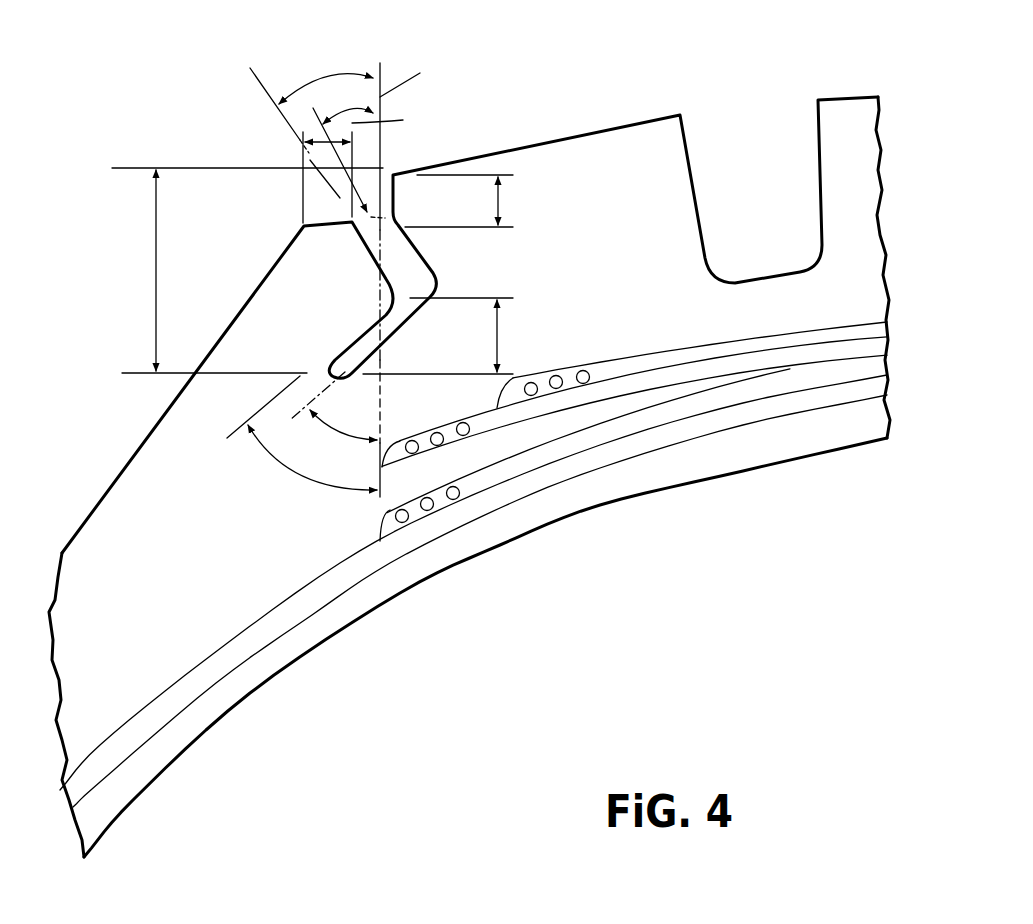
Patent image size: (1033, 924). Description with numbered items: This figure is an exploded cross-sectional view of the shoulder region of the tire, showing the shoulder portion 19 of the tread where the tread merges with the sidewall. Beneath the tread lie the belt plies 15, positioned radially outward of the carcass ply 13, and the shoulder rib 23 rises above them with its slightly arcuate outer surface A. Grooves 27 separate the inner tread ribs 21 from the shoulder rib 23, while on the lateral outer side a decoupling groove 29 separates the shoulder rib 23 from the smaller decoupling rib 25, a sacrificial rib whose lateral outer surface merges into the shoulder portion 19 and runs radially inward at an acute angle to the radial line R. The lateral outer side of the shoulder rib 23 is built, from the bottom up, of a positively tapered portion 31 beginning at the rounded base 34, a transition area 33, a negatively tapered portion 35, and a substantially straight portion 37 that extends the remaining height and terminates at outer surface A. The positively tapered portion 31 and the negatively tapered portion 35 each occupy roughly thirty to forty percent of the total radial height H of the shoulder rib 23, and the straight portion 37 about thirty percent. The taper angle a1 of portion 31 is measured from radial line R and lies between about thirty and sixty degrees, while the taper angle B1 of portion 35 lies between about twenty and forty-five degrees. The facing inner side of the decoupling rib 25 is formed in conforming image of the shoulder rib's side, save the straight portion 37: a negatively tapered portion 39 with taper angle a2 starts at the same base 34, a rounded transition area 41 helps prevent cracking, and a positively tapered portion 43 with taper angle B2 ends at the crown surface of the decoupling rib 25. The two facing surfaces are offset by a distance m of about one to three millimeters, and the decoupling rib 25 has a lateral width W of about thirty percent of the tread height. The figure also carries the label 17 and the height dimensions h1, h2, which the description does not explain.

The carcass ply 13 is at (301, 598).
The belt plies 15 is at (693, 357).
The reinforcement cords / tubes 17 is at (532, 396).
The shoulder portion 19 is at (200, 522).
The tread ribs 21 is at (852, 122).
The shoulder rib 23 is at (610, 150).
The decoupling rib 25 is at (287, 255).
The grooves 27 is at (750, 122).
The decoupling groove 29 is at (383, 192).
The positively tapered portion 31 is at (350, 352).
The transition area 33 is at (362, 316).
The rounded transition area 34 is at (323, 363).
The negatively tapered portion 35 is at (397, 295).
The straight portion 37 is at (383, 192).
The negatively tapered portion 39 is at (350, 352).
The transition area 41 is at (397, 293).
The positively tapered portion 43 is at (373, 250).
The outer surface A is at (455, 158).
The radial height H is at (247, 270).
The height h1 is at (444, 336).
The height h2 is at (465, 201).
The lateral width W is at (364, 167).
The radial line R is at (409, 280).
The offset distance m is at (389, 348).
The taper angle β1 B1 is at (347, 154).
The taper angle β2 B2 is at (311, 107).
The taper angle α1 a1 is at (333, 406).
The taper angle α2 a2 is at (302, 433).